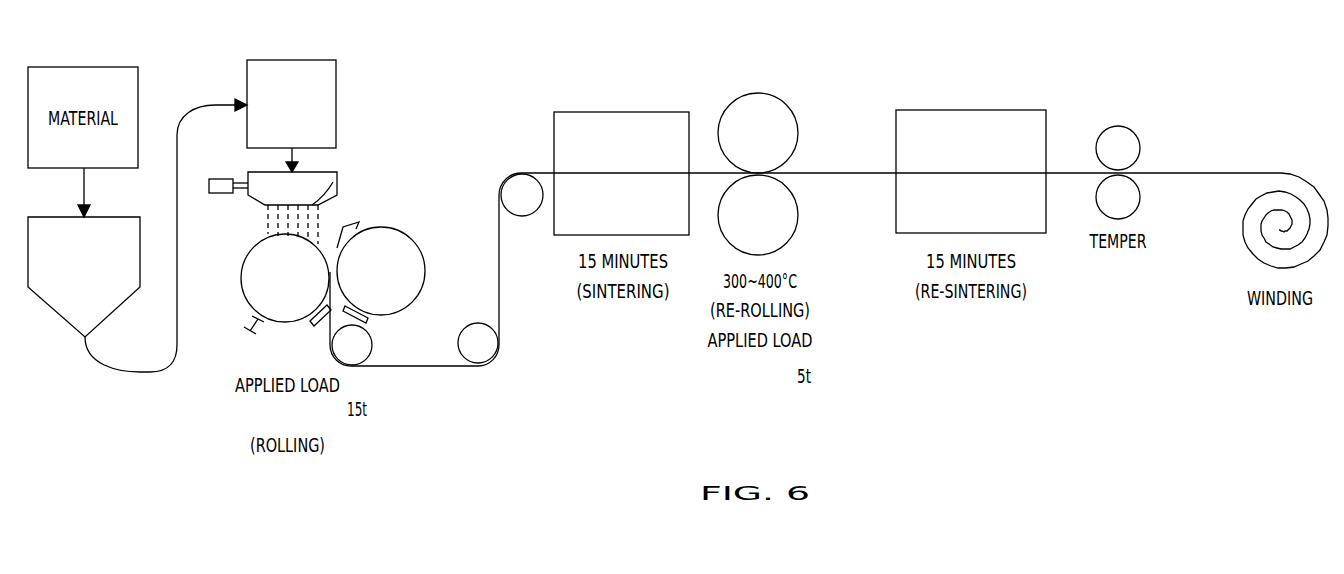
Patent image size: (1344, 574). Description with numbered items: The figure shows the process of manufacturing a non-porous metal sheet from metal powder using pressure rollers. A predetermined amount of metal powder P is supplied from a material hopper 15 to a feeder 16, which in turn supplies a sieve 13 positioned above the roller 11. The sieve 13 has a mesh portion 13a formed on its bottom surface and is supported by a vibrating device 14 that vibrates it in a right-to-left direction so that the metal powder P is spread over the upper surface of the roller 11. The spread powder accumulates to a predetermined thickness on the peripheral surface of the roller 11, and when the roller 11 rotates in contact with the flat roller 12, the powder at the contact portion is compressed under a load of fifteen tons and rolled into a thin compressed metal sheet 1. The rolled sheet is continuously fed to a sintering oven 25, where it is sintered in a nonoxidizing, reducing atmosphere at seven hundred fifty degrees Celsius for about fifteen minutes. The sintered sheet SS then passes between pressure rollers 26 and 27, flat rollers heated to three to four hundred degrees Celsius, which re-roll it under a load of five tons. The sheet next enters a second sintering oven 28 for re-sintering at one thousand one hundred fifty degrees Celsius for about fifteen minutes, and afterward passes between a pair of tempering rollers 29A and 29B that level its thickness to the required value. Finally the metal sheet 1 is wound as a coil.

The metal sheet 1 is at (1193, 172).
The pressure roller 11 is at (256, 284).
The pressure roller 12 is at (405, 280).
The sieve 13 is at (327, 172).
The mesh portion 13a is at (320, 189).
The vibrating device 14 is at (208, 187).
The material hopper 15 is at (66, 302).
The feeder 16 is at (337, 77).
The sintering oven 25 is at (630, 111).
The pressure roller 26 is at (758, 93).
The pressure roller 27 is at (798, 212).
The sintering oven 28 is at (977, 110).
The tempering roller 29A is at (1118, 127).
The tempering roller 29B is at (1140, 198).
The metal powder P is at (262, 222).
The sintered sheet SS is at (841, 172).